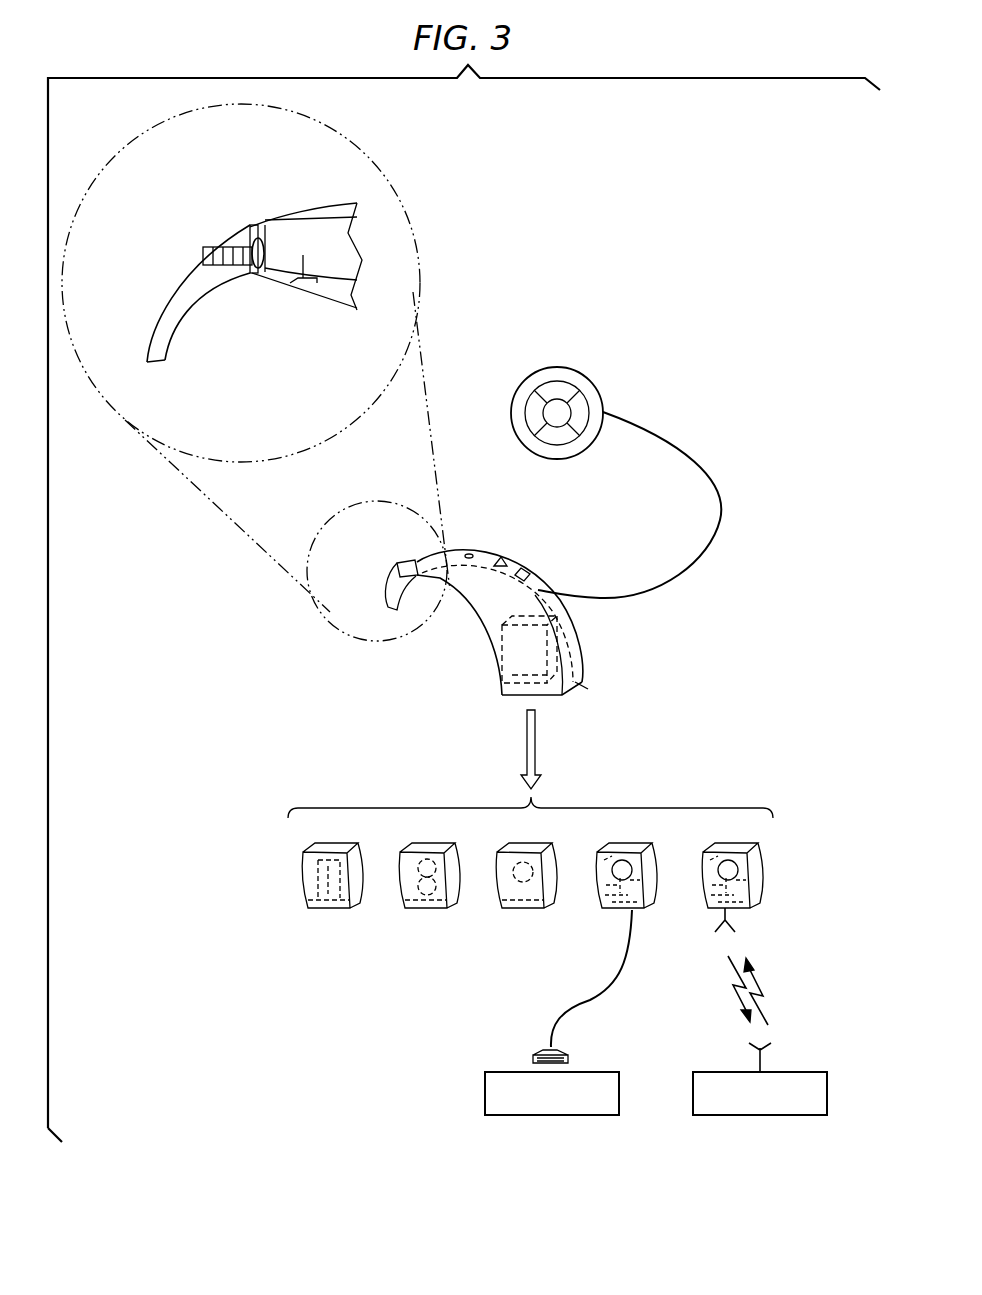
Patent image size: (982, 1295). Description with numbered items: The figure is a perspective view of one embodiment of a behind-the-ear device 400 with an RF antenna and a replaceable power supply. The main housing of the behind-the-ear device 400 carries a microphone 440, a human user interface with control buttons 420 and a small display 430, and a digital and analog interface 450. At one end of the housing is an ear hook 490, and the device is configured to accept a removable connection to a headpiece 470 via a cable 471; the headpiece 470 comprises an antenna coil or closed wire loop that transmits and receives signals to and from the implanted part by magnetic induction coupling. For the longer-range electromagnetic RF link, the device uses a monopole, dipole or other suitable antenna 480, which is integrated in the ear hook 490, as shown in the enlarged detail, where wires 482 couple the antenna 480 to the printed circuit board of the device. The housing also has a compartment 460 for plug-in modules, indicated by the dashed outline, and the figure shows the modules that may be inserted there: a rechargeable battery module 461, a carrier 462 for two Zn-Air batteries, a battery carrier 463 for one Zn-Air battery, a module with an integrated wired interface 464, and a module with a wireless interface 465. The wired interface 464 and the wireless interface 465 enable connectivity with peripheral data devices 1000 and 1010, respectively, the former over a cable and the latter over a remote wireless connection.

The behind-the-ear device 400 is at (318, 693).
The control buttons 420 is at (500, 560).
The small display 430 is at (527, 570).
The microphone 440 is at (470, 554).
The digital and analog interface 450 is at (572, 690).
The compartment for plug-in modules 460 is at (527, 655).
The rechargeable battery module 461 is at (330, 912).
The carrier for two Zn-Air batteries 462 is at (428, 912).
The battery carrier for one Zn-Air battery 463 is at (518, 912).
The integrated wired interface 464 is at (610, 912).
The wireless interface 465 is at (742, 912).
The headpiece 470 is at (520, 383).
The cable 471 is at (725, 515).
The antenna 480 is at (230, 248).
The wires 482 is at (285, 257).
The ear hook 490 is at (153, 363).
The peripheral data device 1000 is at (552, 1082).
The peripheral data device 1010 is at (760, 1079).